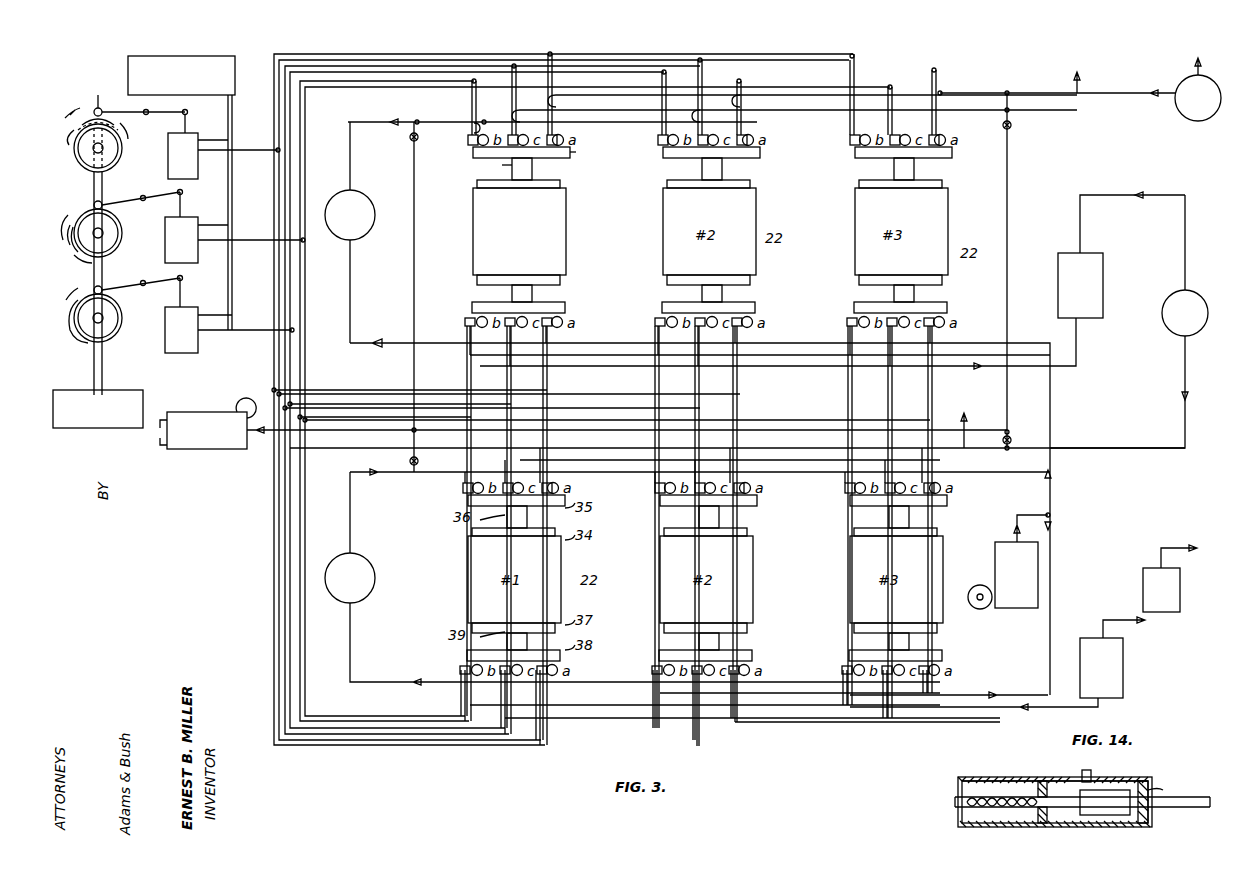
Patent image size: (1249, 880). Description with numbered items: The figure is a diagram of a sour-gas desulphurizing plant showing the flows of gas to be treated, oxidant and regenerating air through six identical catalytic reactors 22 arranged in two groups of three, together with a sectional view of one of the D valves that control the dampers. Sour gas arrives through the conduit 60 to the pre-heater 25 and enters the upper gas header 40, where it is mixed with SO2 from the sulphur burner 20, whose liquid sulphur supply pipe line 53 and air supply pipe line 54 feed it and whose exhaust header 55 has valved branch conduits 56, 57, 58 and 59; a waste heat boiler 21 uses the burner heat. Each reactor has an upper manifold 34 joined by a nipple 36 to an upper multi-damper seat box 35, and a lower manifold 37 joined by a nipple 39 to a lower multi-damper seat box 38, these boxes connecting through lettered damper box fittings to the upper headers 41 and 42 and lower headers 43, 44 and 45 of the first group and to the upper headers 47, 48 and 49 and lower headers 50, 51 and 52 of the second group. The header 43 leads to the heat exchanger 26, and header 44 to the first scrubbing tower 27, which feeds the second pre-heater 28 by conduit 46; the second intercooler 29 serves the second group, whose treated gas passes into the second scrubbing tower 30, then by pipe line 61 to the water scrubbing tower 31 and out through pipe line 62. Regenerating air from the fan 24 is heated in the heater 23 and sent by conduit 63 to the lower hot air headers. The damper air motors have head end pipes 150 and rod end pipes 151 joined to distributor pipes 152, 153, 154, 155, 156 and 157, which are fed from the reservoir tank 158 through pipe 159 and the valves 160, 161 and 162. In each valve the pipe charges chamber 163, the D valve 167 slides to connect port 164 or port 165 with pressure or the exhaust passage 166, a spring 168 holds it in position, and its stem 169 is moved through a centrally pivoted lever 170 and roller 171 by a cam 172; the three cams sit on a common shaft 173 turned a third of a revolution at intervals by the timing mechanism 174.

In FIG. 3, the sulphur burner 20 is at (203, 430).
In FIG. 3, the waste heat boiler 21 is at (236, 402).
In FIG. 3, the catalytic reactor 22 is at (570, 240).
In FIG. 3, the heater 23 is at (1022, 560).
In FIG. 3, the fan 24 is at (975, 610).
In FIG. 3, the pre-heater 25 is at (1215, 115).
In FIG. 3, the heat exchanger or intercooler 26 is at (368, 207).
In FIG. 3, the first scrubbing tower 27 is at (1121, 255).
In FIG. 3, the second pre-heater 28 is at (1129, 321).
In FIG. 3, the second heat exchanger or intercooler 29 is at (380, 558).
In FIG. 3, the second scrubbing tower 30 is at (1101, 668).
In FIG. 3, the water scrubbing tower 31 is at (1161, 590).
In FIG. 3, the upper manifold 34 is at (561, 183).
In FIG. 3, the upper multi-damper seat box 35 is at (571, 156).
In FIG. 3, the connecting fitting or nipple 36 is at (512, 168).
In FIG. 3, the lower manifold 37 is at (561, 278).
In FIG. 3, the lower multi-damper seat box 38 is at (566, 307).
In FIG. 3, the connection fitting or nipple 39 is at (533, 295).
In FIG. 3, the upper gas conduit or header 40 is at (600, 97).
In FIG. 3, the second upper gas conduit or header 41 is at (600, 127).
In FIG. 3, the upper hot air conduit or header 42 is at (600, 112).
In FIG. 3, the lower gas conduit or header 43 is at (590, 345).
In FIG. 3, the second lower gas conduit or header 44 is at (612, 370).
In FIG. 3, the lower hot air conduit or header 45 is at (625, 356).
In FIG. 3, the conduit 46 is at (1187, 278).
In FIG. 3, the upper gas conduit or header 47 is at (628, 470).
In FIG. 3, the second upper gas conduit or header 48 is at (815, 472).
In FIG. 3, the upper hot air conduit or header 49 is at (785, 468).
In FIG. 3, the lower gas conduit or header 50 is at (838, 672).
In FIG. 3, the second lower gas conduit or header 51 is at (945, 708).
In FIG. 3, the lower hot air conduit or header 52 is at (960, 690).
In FIG. 3, the liquid sulphur supply pipe line 53 is at (160, 440).
In FIG. 3, the air supply pipe line 54 is at (160, 420).
In FIG. 3, the conduit or header 55 is at (340, 432).
In FIG. 3, the valved branch conduit 56 is at (1009, 222).
In FIG. 3, the valved branch conduit 57 is at (416, 268).
In FIG. 3, the valved branch conduit 58 is at (1010, 435).
In FIG. 3, the valved branch conduit 59 is at (418, 458).
In FIG. 3, the pipe line or conduit 60 is at (1195, 65).
In FIG. 3, the pipe line 61 is at (1125, 615).
In FIG. 3, the pipe line 62 is at (1188, 542).
In FIG. 3, the pipe line or conduit 63 is at (1030, 505).
In FIG. 3, the head end pipe 150 is at (470, 100).
In FIG. 3, the rod end pipe 151 is at (629, 114).
In FIG. 3, the distributor pipe 152 is at (275, 83).
In FIG. 3, the distributor pipe 153 is at (243, 126).
In FIG. 3, the distributor pipe 154 is at (300, 205).
In FIG. 3, the distributor pipe 155 is at (298, 152).
In FIG. 3, the distributor pipe 156 is at (292, 270).
In FIG. 3, the distributor pipe 157 is at (288, 296).
In FIG. 3, the reservoir tank 158 is at (181, 193).
In FIG. 3, the pipe 159 is at (233, 135).
In FIG. 14, the pipe 159 is at (1092, 773).
In FIG. 3, the valve 160 is at (168, 150).
In FIG. 3, the valve 161 is at (165, 235).
In FIG. 3, the valve 162 is at (165, 323).
In FIG. 14, the chamber 163 is at (1062, 777).
In FIG. 14, the port 164 is at (1050, 833).
In FIG. 14, the port 165 is at (1135, 818).
In FIG. 14, the exhaust passage 166 is at (1095, 816).
In FIG. 14, the D valve 167 is at (1150, 790).
In FIG. 14, the spring 168 is at (962, 794).
In FIG. 3, the stem 169 is at (192, 122).
In FIG. 14, the stem 169 is at (1180, 793).
In FIG. 3, the centrally pivoted lever 170 is at (148, 120).
In FIG. 3, the roller 171 is at (88, 98).
In FIG. 3, the cam 172 is at (78, 158).
In FIG. 3, the common shaft 173 is at (92, 202).
In FIG. 3, the timing mechanism 174 is at (70, 430).